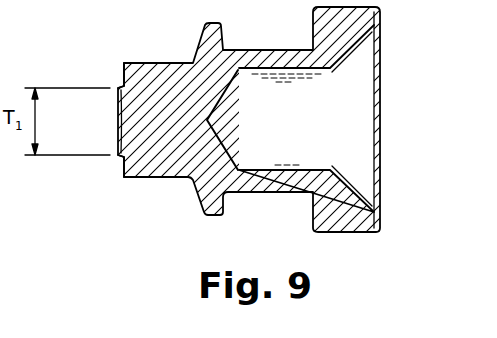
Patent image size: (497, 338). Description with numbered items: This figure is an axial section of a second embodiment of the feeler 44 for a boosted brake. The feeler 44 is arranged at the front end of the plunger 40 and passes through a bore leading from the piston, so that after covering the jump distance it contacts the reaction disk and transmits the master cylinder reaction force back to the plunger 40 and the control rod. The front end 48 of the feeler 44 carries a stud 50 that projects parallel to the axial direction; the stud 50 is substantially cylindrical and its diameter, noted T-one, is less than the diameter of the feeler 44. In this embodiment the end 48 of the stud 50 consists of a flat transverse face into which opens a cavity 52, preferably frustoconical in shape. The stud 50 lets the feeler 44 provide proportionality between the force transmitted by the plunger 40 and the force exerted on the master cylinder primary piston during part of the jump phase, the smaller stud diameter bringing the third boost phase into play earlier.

The plunger 40 is at (172, 91).
The feeler 44 is at (152, 128).
The front end of the feeler 48 is at (122, 82).
The stud 50 is at (118, 133).
The cavity 52 is at (118, 113).